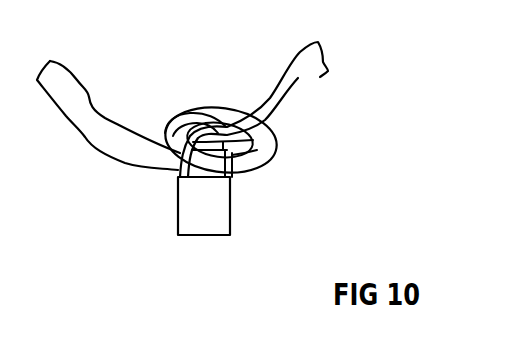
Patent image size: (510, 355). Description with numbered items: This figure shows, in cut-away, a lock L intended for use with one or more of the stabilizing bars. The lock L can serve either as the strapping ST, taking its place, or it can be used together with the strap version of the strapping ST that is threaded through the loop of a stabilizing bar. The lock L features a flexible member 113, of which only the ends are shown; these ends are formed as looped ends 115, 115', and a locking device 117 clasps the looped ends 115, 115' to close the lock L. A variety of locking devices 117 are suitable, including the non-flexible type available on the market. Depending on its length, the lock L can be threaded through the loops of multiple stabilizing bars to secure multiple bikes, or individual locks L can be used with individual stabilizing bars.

The flexible member 113 is at (103, 131).
The strapping ST is at (298, 78).
The lock L is at (253, 141).
The looped end 115 is at (183, 87).
The looped end 115' is at (224, 93).
The locking device 117 is at (203, 207).